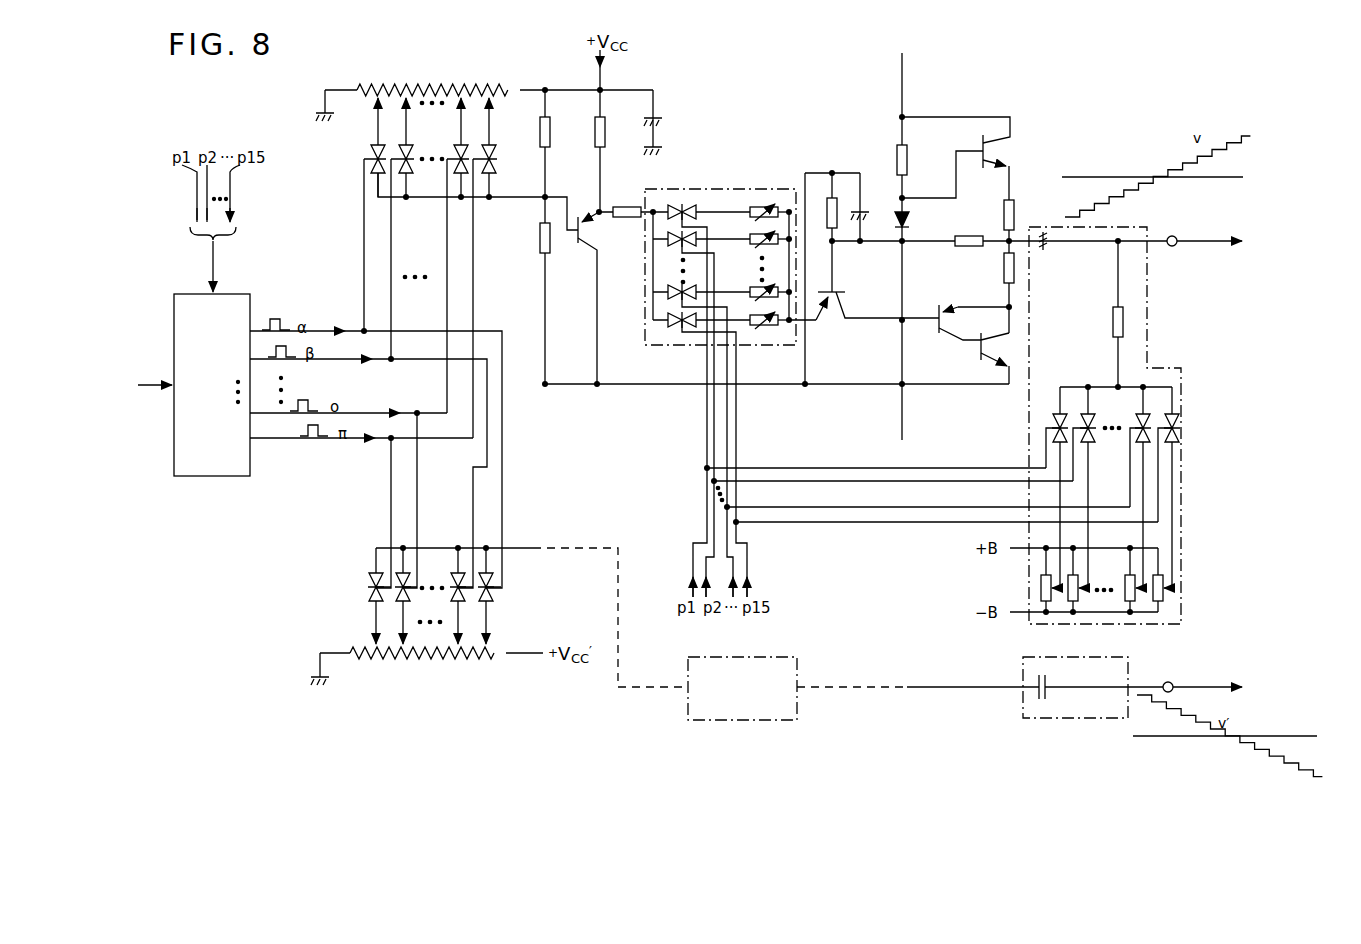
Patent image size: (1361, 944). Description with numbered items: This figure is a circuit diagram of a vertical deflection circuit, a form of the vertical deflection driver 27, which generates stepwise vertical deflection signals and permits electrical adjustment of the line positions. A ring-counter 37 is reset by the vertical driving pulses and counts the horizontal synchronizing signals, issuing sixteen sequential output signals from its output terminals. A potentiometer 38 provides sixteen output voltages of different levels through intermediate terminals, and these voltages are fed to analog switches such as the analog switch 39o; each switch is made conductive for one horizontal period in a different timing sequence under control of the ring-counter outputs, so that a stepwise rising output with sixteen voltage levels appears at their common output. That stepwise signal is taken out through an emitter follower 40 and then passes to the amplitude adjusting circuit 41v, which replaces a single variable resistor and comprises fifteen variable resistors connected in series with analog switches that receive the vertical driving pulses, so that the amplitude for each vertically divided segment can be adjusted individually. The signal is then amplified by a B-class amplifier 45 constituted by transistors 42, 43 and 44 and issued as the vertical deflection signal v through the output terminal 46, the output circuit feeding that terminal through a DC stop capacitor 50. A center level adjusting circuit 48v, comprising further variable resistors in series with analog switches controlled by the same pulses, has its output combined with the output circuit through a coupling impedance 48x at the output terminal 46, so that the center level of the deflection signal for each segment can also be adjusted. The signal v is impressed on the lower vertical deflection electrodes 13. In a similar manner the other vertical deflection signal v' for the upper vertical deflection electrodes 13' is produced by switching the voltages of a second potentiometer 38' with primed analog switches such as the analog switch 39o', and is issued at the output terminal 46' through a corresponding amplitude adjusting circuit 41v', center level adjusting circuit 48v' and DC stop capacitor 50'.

The lower vertical deflection electrode 13 is at (1223, 242).
The upper vertical deflection electrode 13' is at (1222, 685).
The vertical deflection driver 27 is at (381, 48).
The ring-counter 37 is at (210, 477).
The potentiometer 38 is at (432, 73).
The potentiometer 38' is at (427, 670).
The analog switch 39o is at (445, 255).
The analog switch 39o' is at (446, 596).
The emitter follower 40 is at (592, 241).
The amplitude adjusting circuit 41v is at (720, 255).
The amplitude adjusting circuit 41v' is at (748, 673).
The transistor 42 is at (830, 310).
The transistor 43 is at (947, 306).
The transistor 44 is at (990, 163).
The B-class amplifier 45 is at (881, 161).
The output terminal 46 is at (1183, 226).
The output terminal 46' is at (1178, 671).
The coupling impedance 48x is at (1113, 322).
The center level adjusting circuit 48v is at (1108, 425).
The center level adjusting circuit 48v' is at (1075, 707).
The DC stop capacitor 50 is at (1055, 259).
The DC stop capacitor 50' is at (1060, 695).